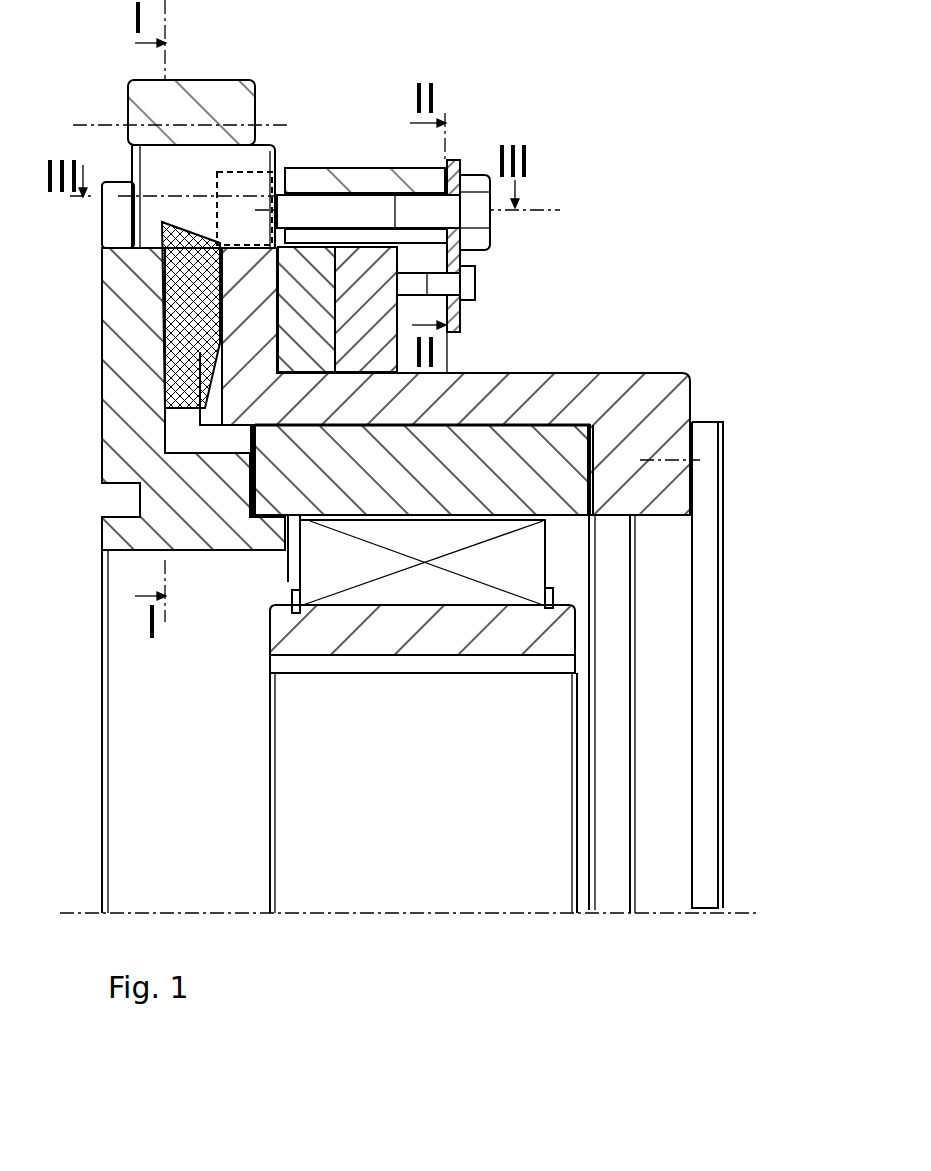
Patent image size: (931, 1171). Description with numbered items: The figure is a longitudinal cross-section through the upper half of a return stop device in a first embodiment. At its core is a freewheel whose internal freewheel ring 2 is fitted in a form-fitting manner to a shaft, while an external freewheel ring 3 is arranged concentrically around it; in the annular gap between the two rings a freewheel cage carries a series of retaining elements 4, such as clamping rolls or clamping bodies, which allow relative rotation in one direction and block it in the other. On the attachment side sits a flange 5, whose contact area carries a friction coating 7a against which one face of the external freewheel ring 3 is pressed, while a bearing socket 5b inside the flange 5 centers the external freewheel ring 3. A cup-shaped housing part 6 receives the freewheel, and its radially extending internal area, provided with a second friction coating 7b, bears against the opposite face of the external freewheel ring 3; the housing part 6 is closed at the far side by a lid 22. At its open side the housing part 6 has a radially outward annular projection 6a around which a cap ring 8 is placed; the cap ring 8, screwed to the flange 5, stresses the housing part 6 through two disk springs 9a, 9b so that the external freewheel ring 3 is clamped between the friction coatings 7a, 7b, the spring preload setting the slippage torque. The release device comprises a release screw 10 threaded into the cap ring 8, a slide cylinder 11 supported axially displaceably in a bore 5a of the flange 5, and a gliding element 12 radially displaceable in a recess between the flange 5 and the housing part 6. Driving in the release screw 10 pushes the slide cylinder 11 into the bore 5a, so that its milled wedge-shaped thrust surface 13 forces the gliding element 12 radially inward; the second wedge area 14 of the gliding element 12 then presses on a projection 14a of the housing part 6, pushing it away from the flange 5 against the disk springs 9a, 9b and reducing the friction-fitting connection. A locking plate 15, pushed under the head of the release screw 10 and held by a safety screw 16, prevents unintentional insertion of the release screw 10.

The internal freewheel ring 2 is at (432, 640).
The external freewheel ring 3 is at (557, 450).
The retaining elements 4 is at (532, 567).
The flange 5 is at (118, 422).
The bore 5a is at (112, 228).
The bearing socket 5b is at (115, 517).
The housing part 6 is at (682, 390).
The annular projection 6a is at (247, 330).
The friction coating 7a is at (267, 520).
The friction coating 7b is at (590, 422).
The cap ring 8 is at (322, 182).
The disk spring 9a is at (373, 345).
The disk spring 9b is at (300, 263).
The release screw 10 is at (473, 200).
The slide cylinder 11 is at (247, 162).
The gliding element 12 is at (175, 263).
The wedge-shaped thrust surface 13 is at (215, 243).
The second wedge area 14 is at (200, 393).
The projection 14a is at (198, 413).
The locking plate 15 is at (460, 250).
The safety screw 16 is at (473, 290).
The lid 22 is at (710, 760).